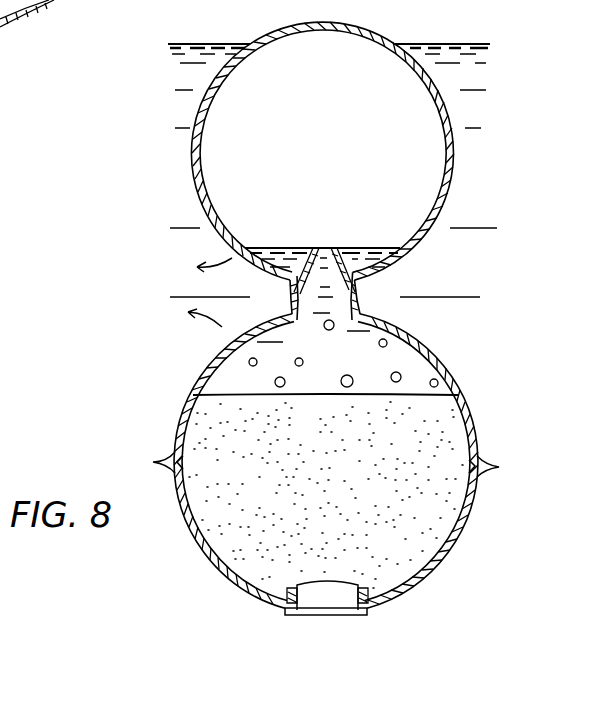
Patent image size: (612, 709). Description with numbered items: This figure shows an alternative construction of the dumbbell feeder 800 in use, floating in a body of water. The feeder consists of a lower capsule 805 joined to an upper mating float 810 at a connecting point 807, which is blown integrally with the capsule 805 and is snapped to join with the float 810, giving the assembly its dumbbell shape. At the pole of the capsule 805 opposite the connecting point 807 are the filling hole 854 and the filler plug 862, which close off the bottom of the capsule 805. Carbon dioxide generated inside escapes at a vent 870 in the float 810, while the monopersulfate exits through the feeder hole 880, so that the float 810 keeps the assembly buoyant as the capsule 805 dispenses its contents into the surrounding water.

The dumbbell feeder 800 is at (500, 217).
The capsule 805 is at (194, 387).
The connecting point 807 is at (336, 248).
The float 810 is at (452, 158).
The filling hole 854 is at (370, 600).
The filler plug 862 is at (312, 603).
The vent 870 is at (235, 250).
The feeder hole 880 is at (224, 343).